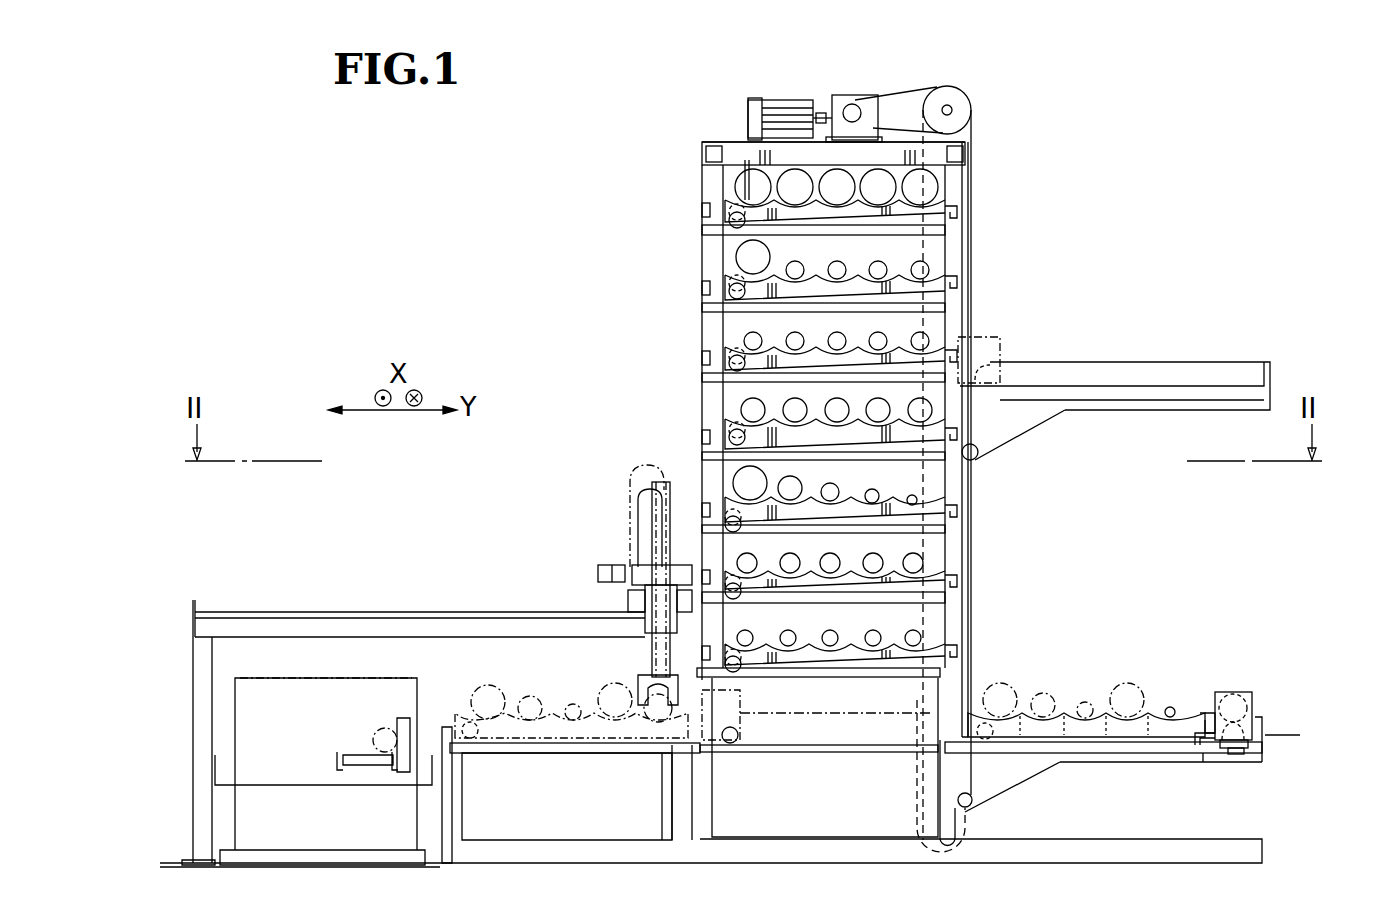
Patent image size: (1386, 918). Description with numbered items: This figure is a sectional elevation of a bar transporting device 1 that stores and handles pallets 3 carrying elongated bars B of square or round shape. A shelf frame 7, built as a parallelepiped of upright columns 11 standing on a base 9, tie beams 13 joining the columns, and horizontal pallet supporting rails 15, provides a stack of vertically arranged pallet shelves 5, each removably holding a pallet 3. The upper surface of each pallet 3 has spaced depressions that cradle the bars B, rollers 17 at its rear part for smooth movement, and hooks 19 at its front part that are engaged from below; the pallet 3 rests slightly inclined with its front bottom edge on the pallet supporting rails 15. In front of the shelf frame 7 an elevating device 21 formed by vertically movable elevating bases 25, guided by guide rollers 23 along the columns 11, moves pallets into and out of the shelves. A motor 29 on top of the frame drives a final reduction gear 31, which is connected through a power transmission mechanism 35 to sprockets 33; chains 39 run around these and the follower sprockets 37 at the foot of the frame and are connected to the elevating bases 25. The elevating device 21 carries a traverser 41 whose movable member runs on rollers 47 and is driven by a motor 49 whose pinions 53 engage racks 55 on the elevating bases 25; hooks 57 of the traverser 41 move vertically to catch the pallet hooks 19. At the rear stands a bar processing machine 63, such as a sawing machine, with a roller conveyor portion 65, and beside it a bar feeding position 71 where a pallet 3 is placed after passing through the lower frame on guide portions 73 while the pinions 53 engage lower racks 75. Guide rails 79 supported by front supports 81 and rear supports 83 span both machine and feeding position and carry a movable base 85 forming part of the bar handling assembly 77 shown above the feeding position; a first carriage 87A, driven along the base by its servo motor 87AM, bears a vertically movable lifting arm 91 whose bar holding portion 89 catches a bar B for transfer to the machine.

The bar transporting device 1 is at (1043, 247).
The pallet 3 is at (728, 215).
The pallet shelf 5 is at (768, 172).
The shelf frame 7 is at (985, 165).
The base 9 is at (1262, 843).
The upright column 11 is at (962, 522).
The tie beam 13 is at (733, 150).
The pallet supporting rail 15 is at (830, 233).
The roller 17 is at (725, 425).
The hook 19 is at (968, 270).
The elevating device 21 is at (1110, 338).
The guide roller 23 is at (958, 797).
The elevating base 25 is at (1268, 755).
The motor 29 is at (786, 100).
The final reduction gear 31 is at (856, 100).
The sprocket 33 is at (965, 100).
The power transmission mechanism 35 is at (898, 72).
The follower sprocket 37 is at (912, 825).
The chain 39 is at (973, 138).
The traverser 41 is at (1000, 340).
The roller 47 is at (1222, 750).
The motor 49 is at (1222, 695).
The pinion 53 is at (1236, 756).
The rack 55 is at (1100, 755).
The hook 57 is at (1198, 742).
The bar processing machine 63 is at (333, 829).
The roller conveyor portion 65 is at (338, 738).
The bar feeding position 71 is at (593, 814).
The guide portion 73 is at (700, 753).
The rack 75 is at (790, 752).
The transfer head 77 is at (595, 518).
The guide rail 79 is at (318, 612).
The front support 81 is at (670, 805).
The rear support 83 is at (212, 650).
The movable base 85 is at (598, 580).
The first carriage 87A is at (632, 585).
The servo motor 87AM is at (632, 575).
The bar holding portion 89 is at (640, 688).
The lifting arm 91 is at (652, 660).
The elongated bar B is at (740, 186).